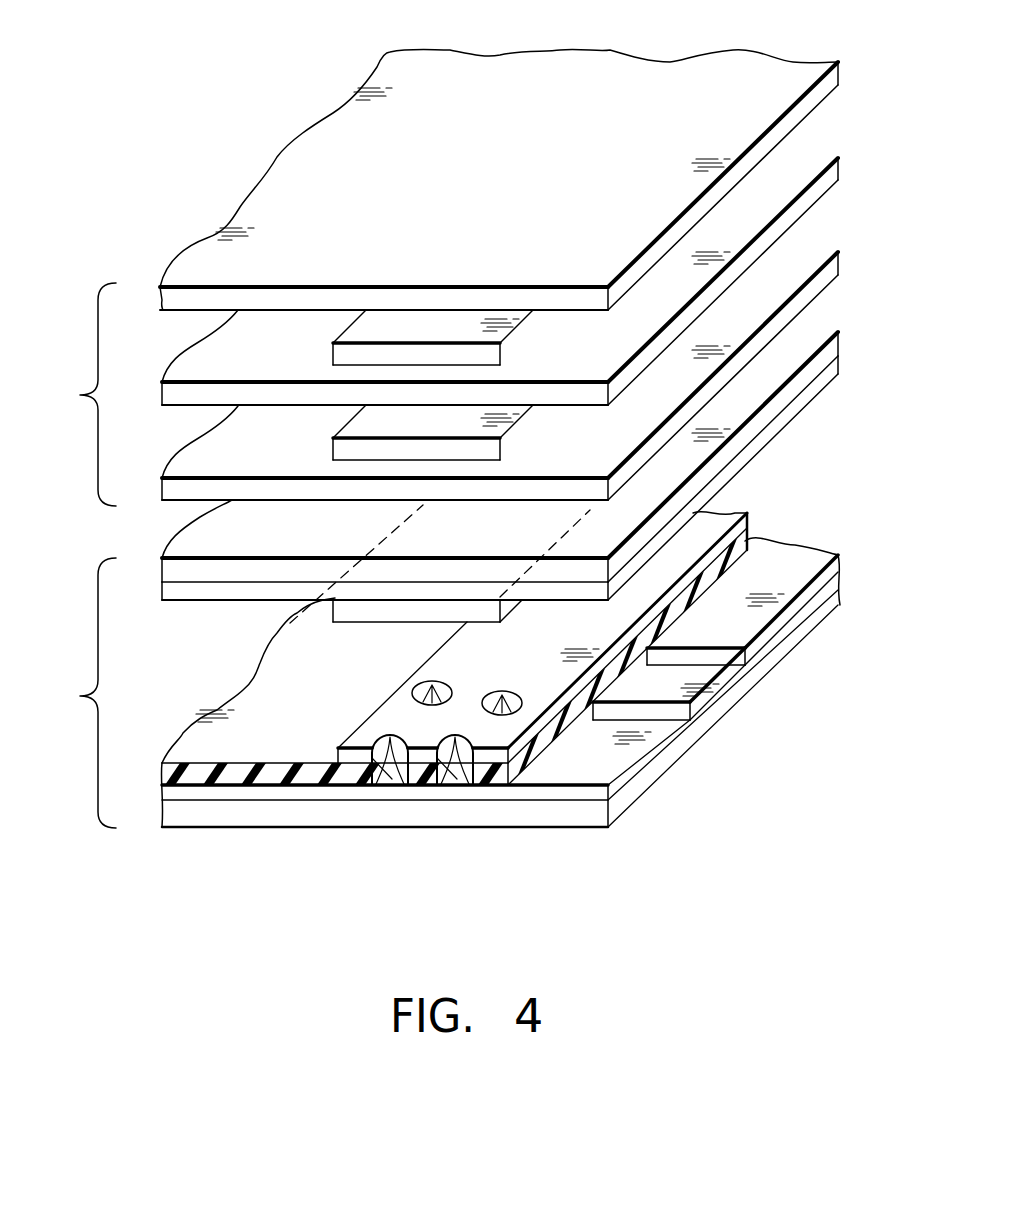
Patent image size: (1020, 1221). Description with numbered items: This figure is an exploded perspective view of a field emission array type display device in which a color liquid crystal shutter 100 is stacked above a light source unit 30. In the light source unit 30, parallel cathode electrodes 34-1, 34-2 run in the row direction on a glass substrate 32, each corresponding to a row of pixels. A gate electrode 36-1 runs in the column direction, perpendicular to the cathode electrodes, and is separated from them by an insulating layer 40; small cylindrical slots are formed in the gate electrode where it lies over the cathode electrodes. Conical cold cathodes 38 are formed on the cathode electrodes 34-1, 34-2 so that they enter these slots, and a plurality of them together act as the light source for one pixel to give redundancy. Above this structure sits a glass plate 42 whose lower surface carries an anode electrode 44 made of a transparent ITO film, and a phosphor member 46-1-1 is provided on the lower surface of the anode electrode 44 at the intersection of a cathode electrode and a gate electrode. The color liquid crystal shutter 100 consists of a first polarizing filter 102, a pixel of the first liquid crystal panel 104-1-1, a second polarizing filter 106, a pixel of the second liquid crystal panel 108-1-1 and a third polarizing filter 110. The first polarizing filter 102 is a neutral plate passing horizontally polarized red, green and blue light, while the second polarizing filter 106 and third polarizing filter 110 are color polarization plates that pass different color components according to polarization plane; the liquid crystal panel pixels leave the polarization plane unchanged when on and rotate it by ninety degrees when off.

The light source unit 30 is at (467, 699).
The glass substrate 32 is at (260, 817).
The cathode electrode 34-1 is at (602, 763).
The cathode electrode 34-2 is at (737, 630).
The gate electrode 36-1 is at (407, 717).
The cold cathodes 38 is at (448, 782).
The insulating layer 40 is at (747, 548).
The glass plate 42 is at (833, 349).
The anode electrode 44 is at (833, 367).
The phosphor member 46-1-1 is at (368, 613).
The color liquid crystal shutter 100 is at (452, 253).
The first polarizing filter 102 is at (797, 263).
The first liquid crystal panel 104-1-1 is at (343, 449).
The second polarizing filter 106 is at (797, 165).
The second liquid crystal panel 108-1-1 is at (343, 354).
The third polarizing filter 110 is at (690, 72).